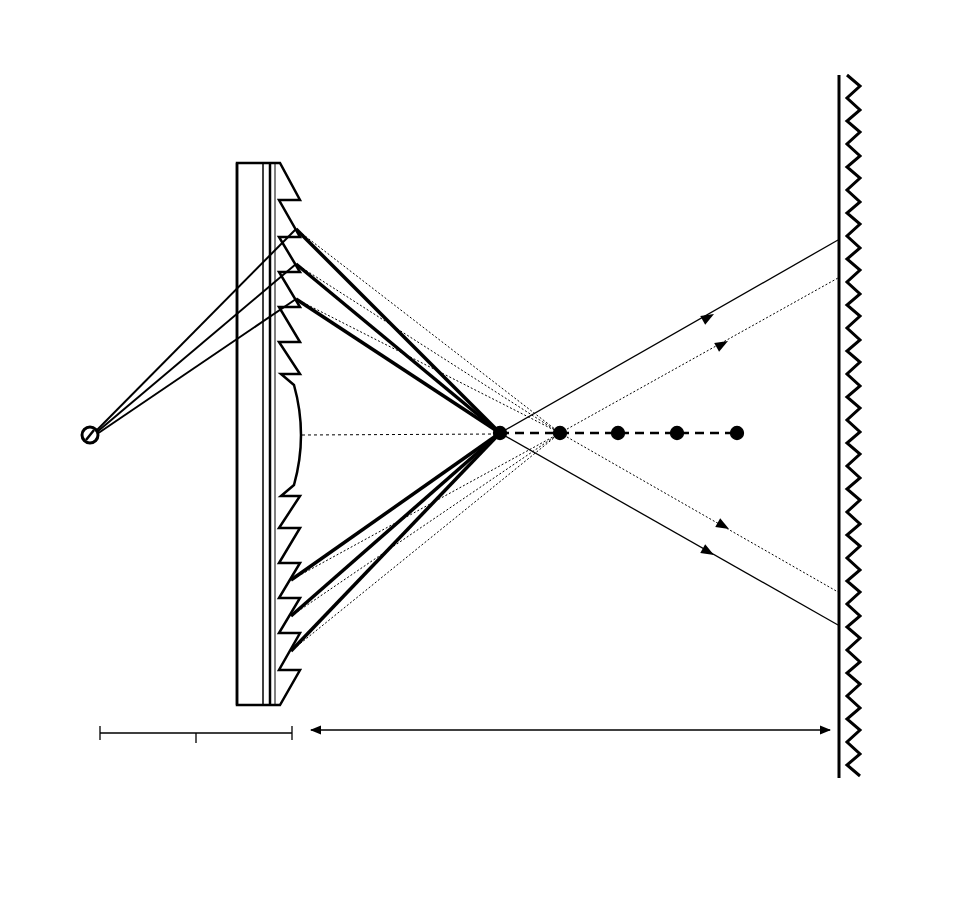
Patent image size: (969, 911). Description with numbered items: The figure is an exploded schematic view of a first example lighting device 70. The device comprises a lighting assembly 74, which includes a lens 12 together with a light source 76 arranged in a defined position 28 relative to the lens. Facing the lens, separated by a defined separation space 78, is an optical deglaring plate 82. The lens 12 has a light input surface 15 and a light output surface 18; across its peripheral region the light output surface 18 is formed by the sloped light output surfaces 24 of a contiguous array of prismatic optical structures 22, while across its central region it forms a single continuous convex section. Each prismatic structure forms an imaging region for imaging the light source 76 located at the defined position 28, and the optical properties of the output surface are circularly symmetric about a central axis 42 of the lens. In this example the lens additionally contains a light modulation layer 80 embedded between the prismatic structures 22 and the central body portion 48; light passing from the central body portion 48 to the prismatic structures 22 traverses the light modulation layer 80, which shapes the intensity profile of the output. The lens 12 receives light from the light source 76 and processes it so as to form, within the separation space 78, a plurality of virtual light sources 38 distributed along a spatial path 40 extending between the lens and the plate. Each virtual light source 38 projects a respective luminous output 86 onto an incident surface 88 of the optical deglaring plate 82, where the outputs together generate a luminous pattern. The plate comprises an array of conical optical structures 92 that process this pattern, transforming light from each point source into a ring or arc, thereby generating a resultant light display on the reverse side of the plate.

The lighting device 70 is at (126, 120).
The lens 12 is at (246, 148).
The sloped light output surfaces 24 is at (292, 150).
The light input surface 15 is at (200, 492).
The central body portion 48 is at (248, 541).
The prismatic optical structures 22 is at (280, 542).
The light modulation layer 80 is at (262, 688).
The light output surface 18 is at (336, 673).
The light source 76 is at (83, 432).
The defined position 28 is at (68, 453).
The central axis 42 is at (418, 437).
The spatial path 40 is at (585, 438).
The virtual light sources 38 is at (687, 428).
The luminous output 86 is at (812, 252).
The incident surface 88 is at (835, 88).
The optical deglaring plate 82 is at (840, 56).
The conical optical structures 92 is at (860, 146).
The lighting assembly 74 is at (196, 748).
The separation space 78 is at (570, 749).